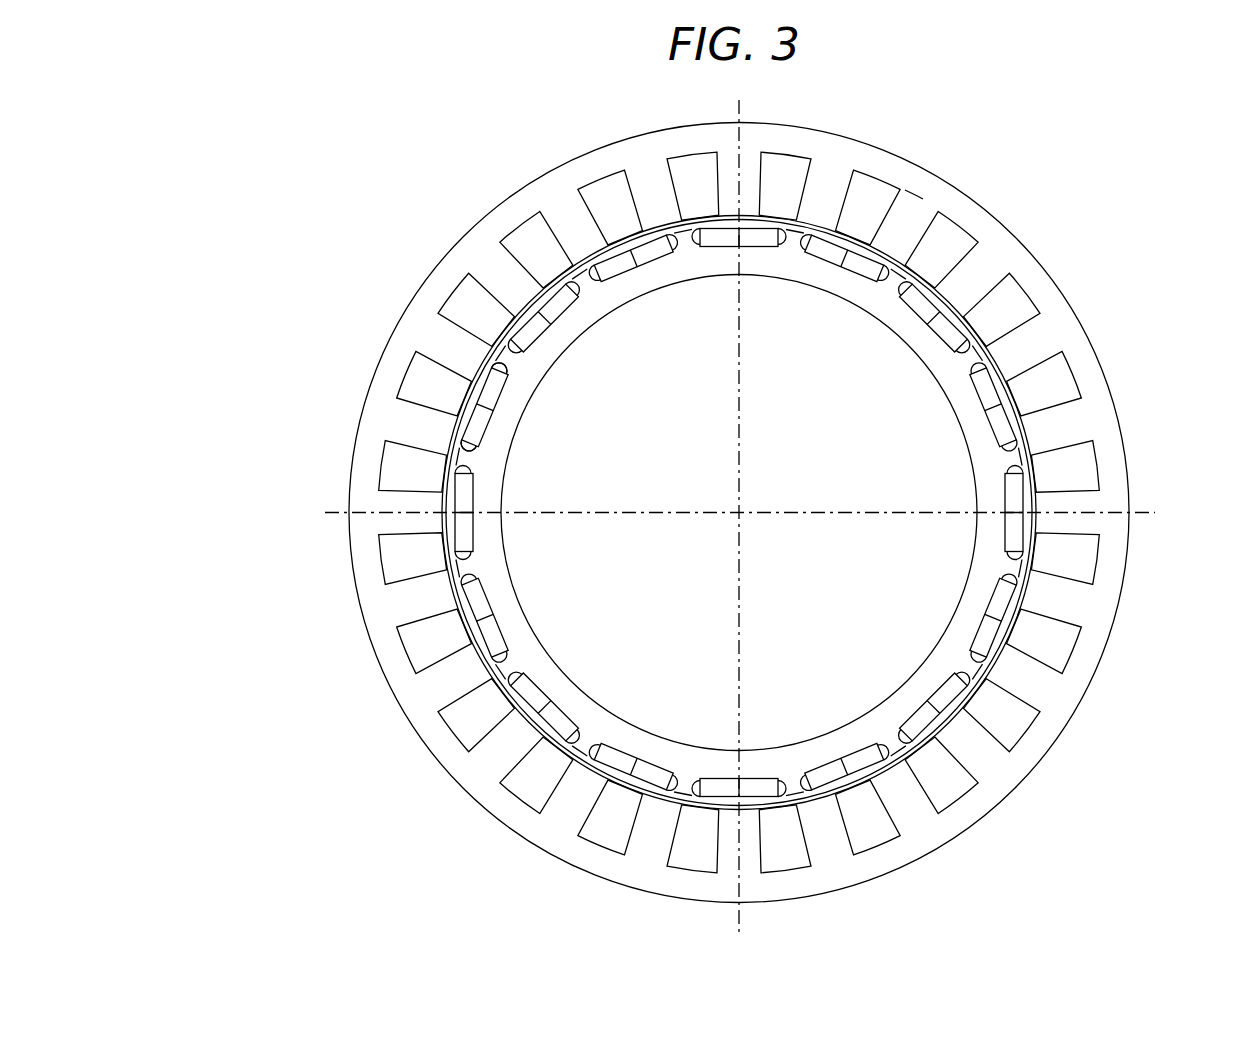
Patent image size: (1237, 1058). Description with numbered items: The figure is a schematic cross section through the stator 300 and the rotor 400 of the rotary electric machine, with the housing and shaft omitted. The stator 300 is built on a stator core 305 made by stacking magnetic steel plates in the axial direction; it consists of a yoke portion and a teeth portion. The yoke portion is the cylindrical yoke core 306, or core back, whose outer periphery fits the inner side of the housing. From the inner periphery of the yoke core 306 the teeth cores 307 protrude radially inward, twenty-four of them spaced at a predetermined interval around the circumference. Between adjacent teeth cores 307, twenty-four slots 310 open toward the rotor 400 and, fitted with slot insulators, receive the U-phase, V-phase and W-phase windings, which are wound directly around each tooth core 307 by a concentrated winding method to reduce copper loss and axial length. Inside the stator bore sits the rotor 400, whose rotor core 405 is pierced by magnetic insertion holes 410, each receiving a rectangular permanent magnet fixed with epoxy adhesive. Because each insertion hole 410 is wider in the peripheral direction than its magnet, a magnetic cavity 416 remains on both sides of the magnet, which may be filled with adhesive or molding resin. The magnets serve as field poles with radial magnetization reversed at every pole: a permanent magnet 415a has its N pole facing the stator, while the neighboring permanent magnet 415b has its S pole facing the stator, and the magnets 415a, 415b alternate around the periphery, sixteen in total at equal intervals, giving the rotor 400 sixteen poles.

The stator 300 is at (767, 501).
The stator core 305 is at (544, 175).
The yoke core 306 is at (923, 199).
The teeth core 307 is at (973, 278).
The slot 310 is at (1071, 364).
The rotor 400 is at (613, 513).
The rotor core 405 is at (910, 321).
The magnetic insertion hole 410 is at (500, 633).
The permanent magnet 415a is at (480, 420).
The permanent magnet 415b is at (465, 532).
The magnetic cavity 416 is at (470, 447).